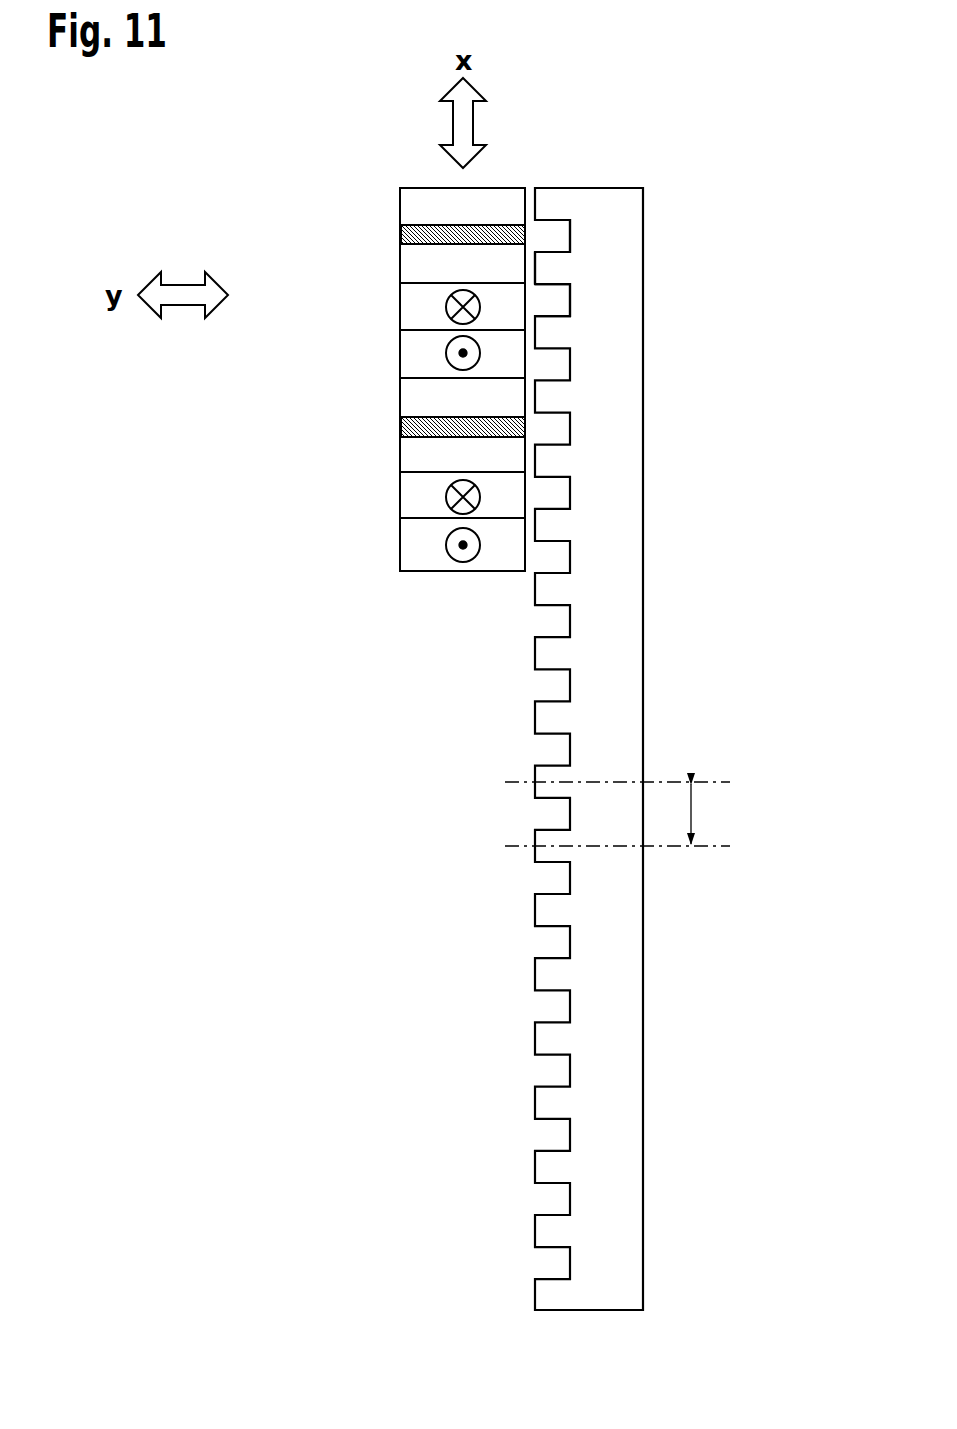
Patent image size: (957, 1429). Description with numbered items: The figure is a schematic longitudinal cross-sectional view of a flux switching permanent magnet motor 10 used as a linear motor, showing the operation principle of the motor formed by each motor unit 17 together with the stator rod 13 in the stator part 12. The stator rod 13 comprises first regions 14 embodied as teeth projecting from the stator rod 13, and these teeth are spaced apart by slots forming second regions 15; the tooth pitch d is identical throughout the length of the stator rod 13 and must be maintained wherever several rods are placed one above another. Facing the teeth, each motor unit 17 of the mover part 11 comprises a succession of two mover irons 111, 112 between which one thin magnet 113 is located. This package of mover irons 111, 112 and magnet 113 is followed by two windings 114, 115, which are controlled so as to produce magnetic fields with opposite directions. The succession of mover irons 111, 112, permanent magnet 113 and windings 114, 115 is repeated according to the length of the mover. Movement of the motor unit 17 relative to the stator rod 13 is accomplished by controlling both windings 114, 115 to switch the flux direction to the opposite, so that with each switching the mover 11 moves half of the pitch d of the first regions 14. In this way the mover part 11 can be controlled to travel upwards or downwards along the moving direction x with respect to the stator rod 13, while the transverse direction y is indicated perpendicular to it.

The linear drive / electric machine 10 is at (780, 106).
The mover part 11 is at (362, 594).
The stator part 12 is at (703, 440).
The stator rod 13 is at (643, 381).
The first regions 14 is at (550, 207).
The second regions 15 is at (553, 303).
The motor unit 17 is at (412, 166).
The mover iron 111 is at (415, 203).
The mover iron 112 is at (415, 262).
The magnet 113 is at (397, 232).
The winding 114 is at (415, 296).
The winding 115 is at (415, 350).